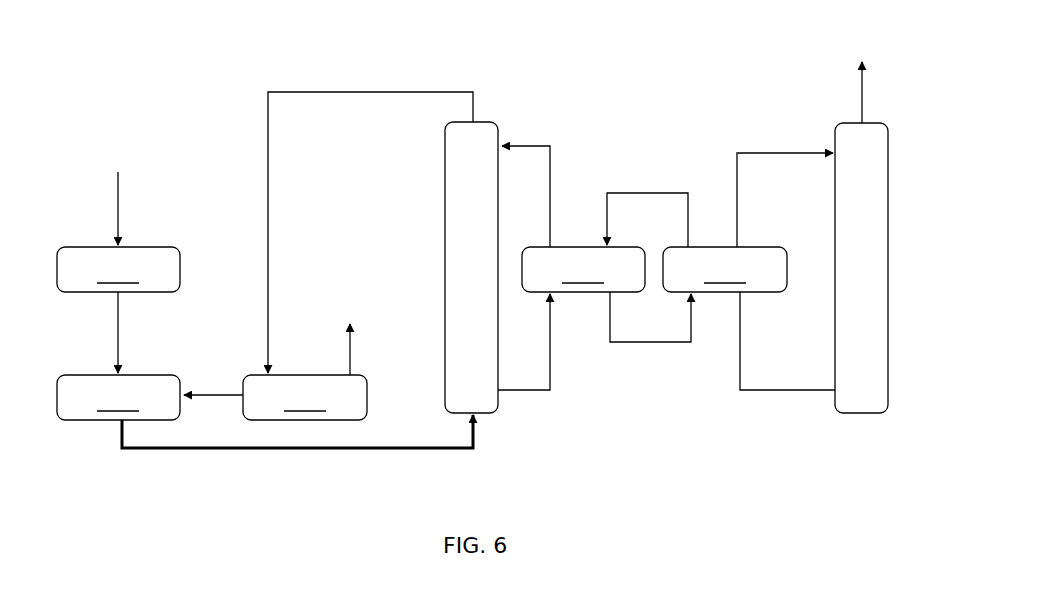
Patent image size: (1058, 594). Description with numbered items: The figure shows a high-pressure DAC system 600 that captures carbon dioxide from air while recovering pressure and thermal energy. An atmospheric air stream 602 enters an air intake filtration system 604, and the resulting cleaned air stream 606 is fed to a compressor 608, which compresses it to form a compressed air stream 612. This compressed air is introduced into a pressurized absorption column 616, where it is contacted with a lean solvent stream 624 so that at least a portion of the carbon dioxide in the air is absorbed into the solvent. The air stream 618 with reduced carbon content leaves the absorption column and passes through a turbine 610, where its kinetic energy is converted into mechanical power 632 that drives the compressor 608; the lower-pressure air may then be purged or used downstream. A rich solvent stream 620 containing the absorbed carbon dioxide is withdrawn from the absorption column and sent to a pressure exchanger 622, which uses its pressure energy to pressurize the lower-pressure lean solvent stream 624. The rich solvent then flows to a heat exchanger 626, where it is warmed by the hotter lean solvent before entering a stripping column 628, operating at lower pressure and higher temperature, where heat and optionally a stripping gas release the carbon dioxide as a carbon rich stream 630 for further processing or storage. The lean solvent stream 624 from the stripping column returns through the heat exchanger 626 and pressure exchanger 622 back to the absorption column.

The high-pressure DAC system 600 is at (140, 110).
The atmospheric air stream 602 is at (117, 200).
The air intake filtration system 604 is at (118, 269).
The cleaned air stream 606 is at (117, 317).
The compressor 608 is at (118, 397).
The turbine 610 is at (305, 397).
The compressed air stream 612 is at (342, 452).
The pressurized absorption column 616 is at (445, 180).
The air stream 618 is at (338, 90).
The rich solvent stream 620 is at (515, 393).
The pressure exchanger 622 is at (583, 269).
The lean solvent stream 624 is at (529, 143).
The heat exchanger 626 is at (725, 269).
The stripping column 628 is at (888, 207).
The carbon rich stream 630 is at (862, 97).
The mechanical power 632 is at (230, 392).